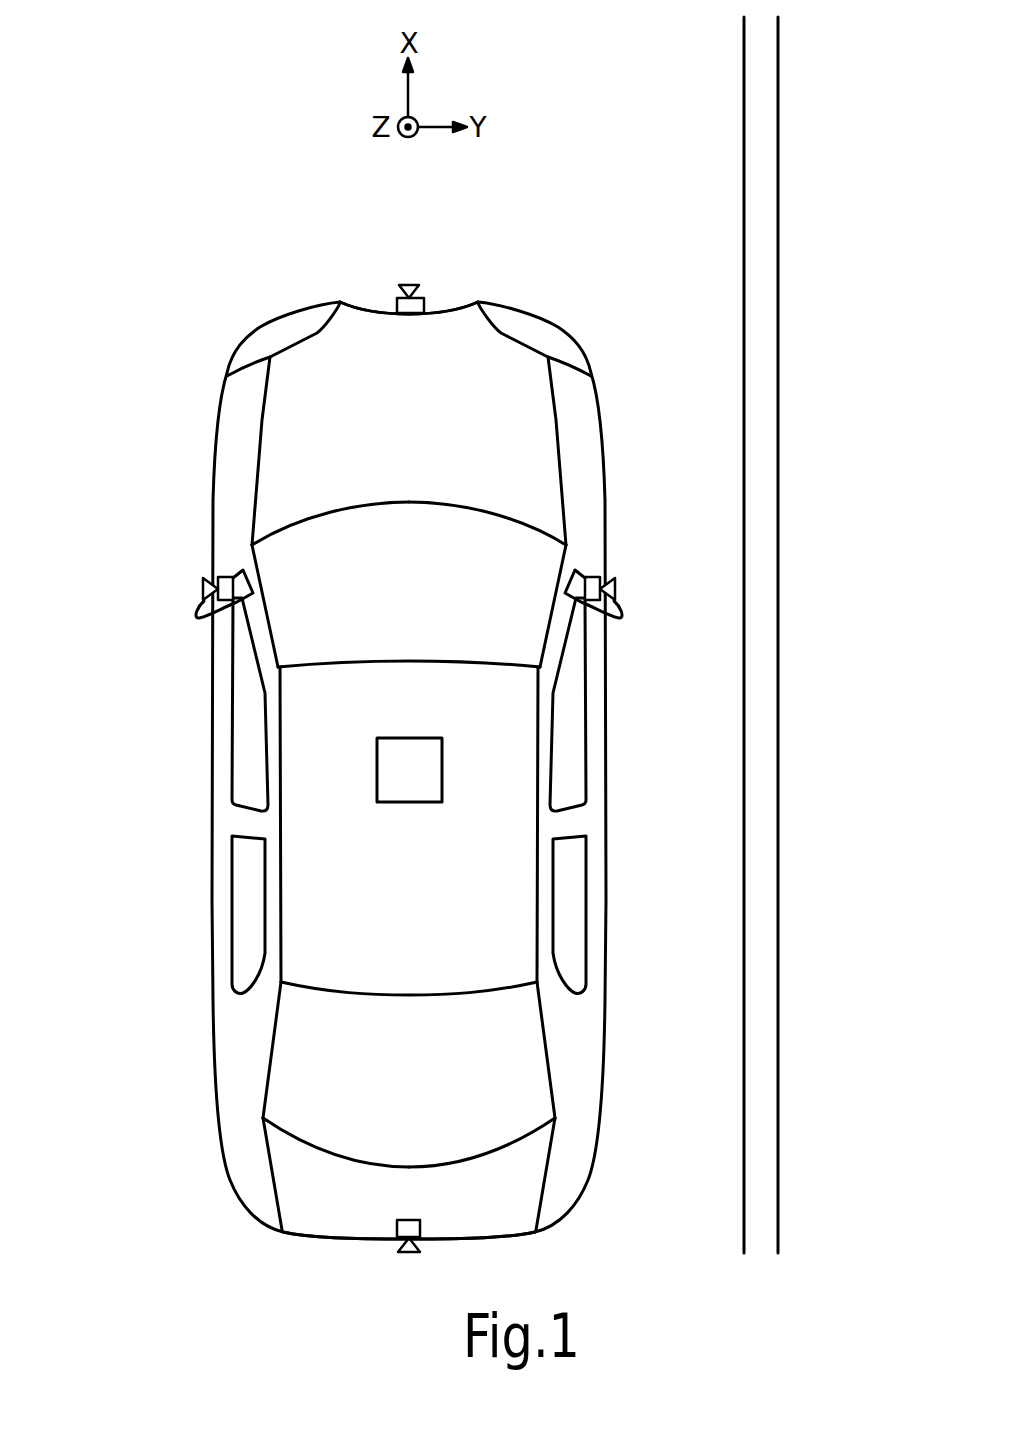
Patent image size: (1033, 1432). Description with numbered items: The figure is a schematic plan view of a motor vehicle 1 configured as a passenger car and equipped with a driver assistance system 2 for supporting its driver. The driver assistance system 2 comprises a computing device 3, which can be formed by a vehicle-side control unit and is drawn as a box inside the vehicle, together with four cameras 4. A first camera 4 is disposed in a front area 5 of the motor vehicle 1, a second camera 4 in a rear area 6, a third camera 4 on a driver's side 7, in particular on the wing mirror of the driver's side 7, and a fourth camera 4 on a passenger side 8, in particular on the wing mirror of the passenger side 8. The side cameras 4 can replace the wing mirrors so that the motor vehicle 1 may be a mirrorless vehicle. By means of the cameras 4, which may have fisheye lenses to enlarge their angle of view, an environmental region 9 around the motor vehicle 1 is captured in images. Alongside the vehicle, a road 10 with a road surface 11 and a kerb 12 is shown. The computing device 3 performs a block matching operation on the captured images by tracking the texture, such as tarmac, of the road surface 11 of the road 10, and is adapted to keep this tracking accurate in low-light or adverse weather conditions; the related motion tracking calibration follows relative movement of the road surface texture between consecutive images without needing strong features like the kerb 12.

The motor vehicle 1 is at (443, 304).
The driver assistance system 2 is at (303, 697).
The computing device 3 is at (442, 773).
The camera 4 is at (397, 305).
The front area 5 is at (413, 243).
The rear area 6 is at (372, 1262).
The driver's side 7 is at (171, 591).
The passenger side 8 is at (644, 636).
The environmental region 9 is at (122, 753).
The road 10 is at (722, 433).
The road surface 11 is at (789, 635).
The kerb 12 is at (767, 513).